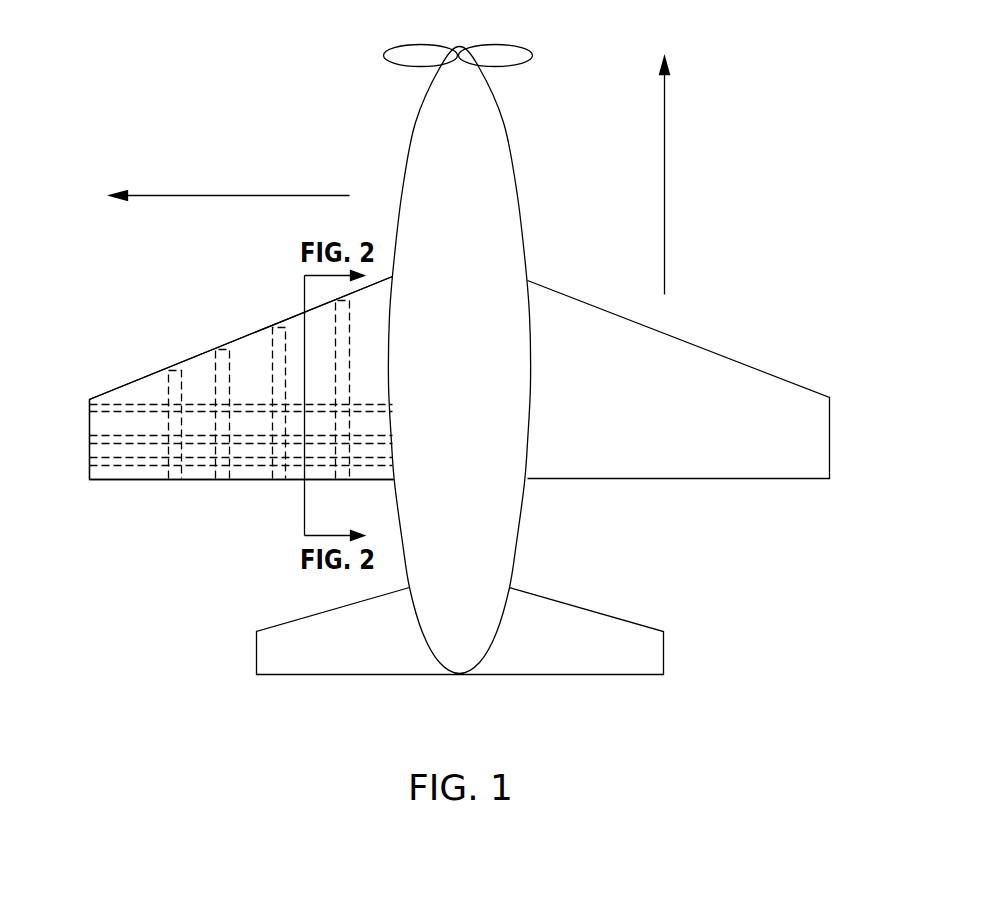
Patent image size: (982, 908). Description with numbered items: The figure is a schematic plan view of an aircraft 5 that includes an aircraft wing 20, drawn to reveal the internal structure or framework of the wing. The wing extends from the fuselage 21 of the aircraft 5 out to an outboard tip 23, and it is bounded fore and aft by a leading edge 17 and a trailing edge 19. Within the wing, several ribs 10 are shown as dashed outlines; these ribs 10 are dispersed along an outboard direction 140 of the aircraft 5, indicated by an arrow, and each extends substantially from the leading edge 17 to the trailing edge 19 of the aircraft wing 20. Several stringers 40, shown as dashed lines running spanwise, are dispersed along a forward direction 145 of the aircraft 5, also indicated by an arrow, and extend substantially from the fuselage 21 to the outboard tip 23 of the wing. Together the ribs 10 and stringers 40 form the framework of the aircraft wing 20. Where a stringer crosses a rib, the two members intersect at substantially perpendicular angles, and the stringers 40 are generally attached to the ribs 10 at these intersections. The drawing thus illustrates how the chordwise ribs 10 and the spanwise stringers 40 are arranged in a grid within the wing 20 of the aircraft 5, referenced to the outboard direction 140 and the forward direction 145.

The aircraft 5 is at (172, 84).
The ribs 10 is at (272, 328).
The leading edge 17 is at (202, 348).
The trailing edge 19 is at (160, 477).
The aircraft wing 20 is at (153, 368).
The fuselage 21 is at (450, 374).
The outboard tip 23 is at (87, 420).
The stringers 40 is at (125, 400).
The outboard direction 140 is at (320, 193).
The forward direction 145 is at (662, 268).